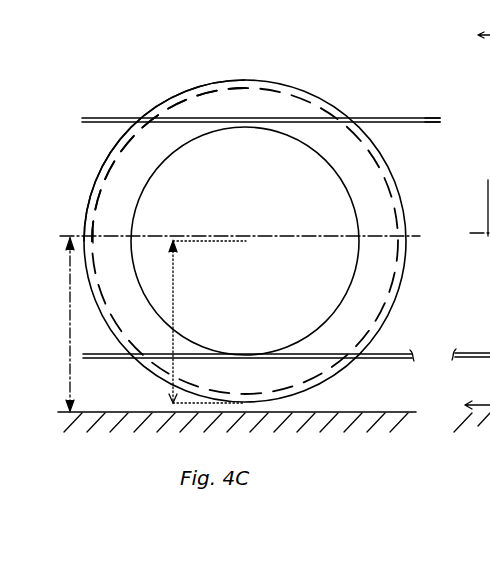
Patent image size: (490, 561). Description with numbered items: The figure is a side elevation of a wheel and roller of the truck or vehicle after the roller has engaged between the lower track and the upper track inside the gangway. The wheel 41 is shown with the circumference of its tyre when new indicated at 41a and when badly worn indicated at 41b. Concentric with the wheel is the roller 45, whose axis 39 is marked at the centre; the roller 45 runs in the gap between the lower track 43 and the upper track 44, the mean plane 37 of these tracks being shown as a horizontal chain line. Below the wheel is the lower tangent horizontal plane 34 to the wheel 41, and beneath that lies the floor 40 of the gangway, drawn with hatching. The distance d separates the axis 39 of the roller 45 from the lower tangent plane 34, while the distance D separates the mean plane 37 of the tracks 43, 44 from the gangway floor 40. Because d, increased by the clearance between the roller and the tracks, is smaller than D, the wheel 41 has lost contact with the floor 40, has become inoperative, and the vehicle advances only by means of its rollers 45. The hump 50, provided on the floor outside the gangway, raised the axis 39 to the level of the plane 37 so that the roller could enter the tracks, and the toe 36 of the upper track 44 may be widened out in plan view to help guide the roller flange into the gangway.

The lower tangent horizontal plane 34 is at (172, 400).
The toe of the upper track 36 is at (440, 118).
The mean plane of the tracks 37 is at (473, 233).
The axis of the rollers 39 is at (247, 241).
The floor of the gangway 40 is at (343, 412).
The wheels 41 is at (200, 103).
The circumference of new tyre 41a is at (115, 147).
The circumference of badly worn tyre 41b is at (106, 187).
The lower track 43 is at (412, 353).
The upper track 44 is at (373, 118).
The rollers 45 is at (336, 170).
The hump 50 is at (477, 391).
The distance from mean plane of tracks to gangway floor D is at (60, 324).